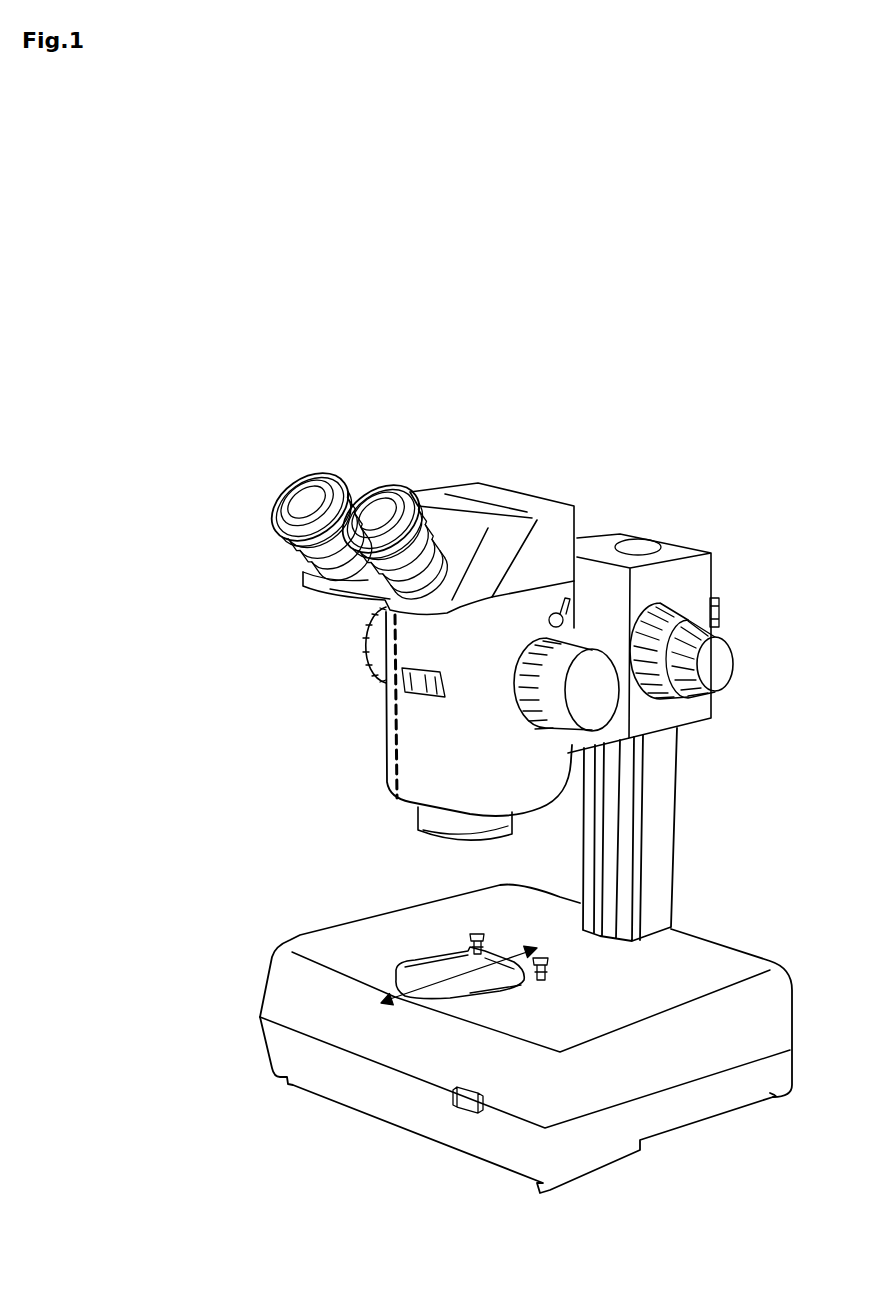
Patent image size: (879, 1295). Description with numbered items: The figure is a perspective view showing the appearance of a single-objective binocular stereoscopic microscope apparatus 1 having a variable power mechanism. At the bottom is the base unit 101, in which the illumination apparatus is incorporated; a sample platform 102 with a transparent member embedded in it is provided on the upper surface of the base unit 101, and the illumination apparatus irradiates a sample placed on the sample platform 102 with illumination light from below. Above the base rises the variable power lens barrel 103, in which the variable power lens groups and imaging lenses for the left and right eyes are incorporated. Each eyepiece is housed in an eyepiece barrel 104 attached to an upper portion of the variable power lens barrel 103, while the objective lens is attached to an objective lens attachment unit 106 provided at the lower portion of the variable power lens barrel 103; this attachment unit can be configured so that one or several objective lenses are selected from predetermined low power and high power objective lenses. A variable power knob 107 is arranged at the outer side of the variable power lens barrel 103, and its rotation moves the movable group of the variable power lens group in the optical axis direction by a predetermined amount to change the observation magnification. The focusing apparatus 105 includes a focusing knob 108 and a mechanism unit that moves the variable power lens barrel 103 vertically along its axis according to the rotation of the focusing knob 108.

The microscope apparatus 1 is at (638, 425).
The base unit 101 is at (697, 1100).
The sample platform 102 is at (398, 970).
The variable power lens barrel 103 is at (415, 737).
The eyepiece barrel 104 is at (393, 490).
The focusing apparatus 105 is at (695, 568).
The objective lens attachment unit 106 is at (418, 817).
The variable power knob 107 is at (584, 740).
The focusing knob 108 is at (710, 683).